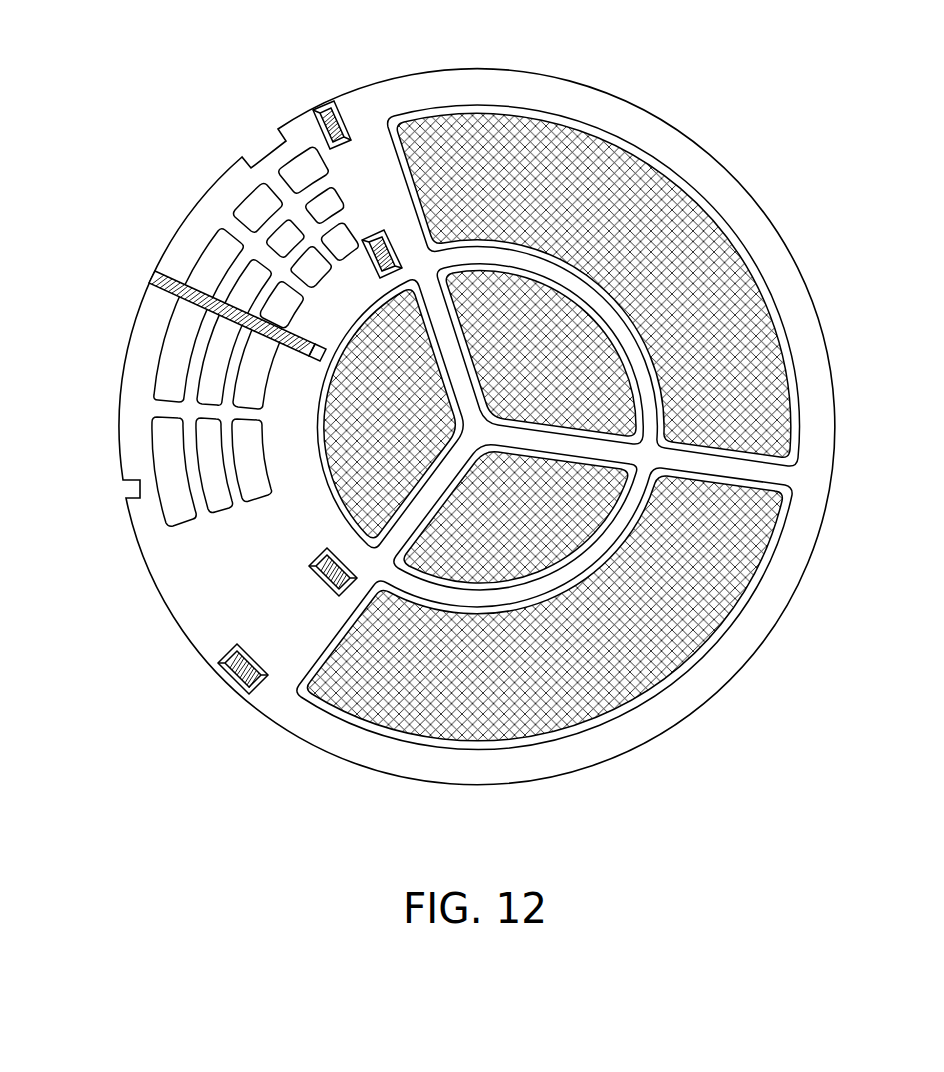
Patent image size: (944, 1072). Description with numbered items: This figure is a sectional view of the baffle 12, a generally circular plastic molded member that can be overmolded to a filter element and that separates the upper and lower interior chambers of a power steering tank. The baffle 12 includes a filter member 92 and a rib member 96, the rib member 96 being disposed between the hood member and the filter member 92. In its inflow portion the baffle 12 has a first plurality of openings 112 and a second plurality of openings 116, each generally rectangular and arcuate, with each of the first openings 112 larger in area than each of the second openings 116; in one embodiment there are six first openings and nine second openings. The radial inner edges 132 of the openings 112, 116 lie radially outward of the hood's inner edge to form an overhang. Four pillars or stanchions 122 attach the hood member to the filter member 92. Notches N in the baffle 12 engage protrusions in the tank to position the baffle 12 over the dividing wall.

The baffle 12 is at (742, 665).
The filter member 92 is at (677, 725).
The rib member 96 is at (300, 357).
The first plurality of openings 112 is at (199, 523).
The second plurality of openings 116 is at (312, 293).
The pillars or stanchions 122 is at (330, 112).
The radial inner edges 132 is at (267, 468).
The notches N is at (270, 155).